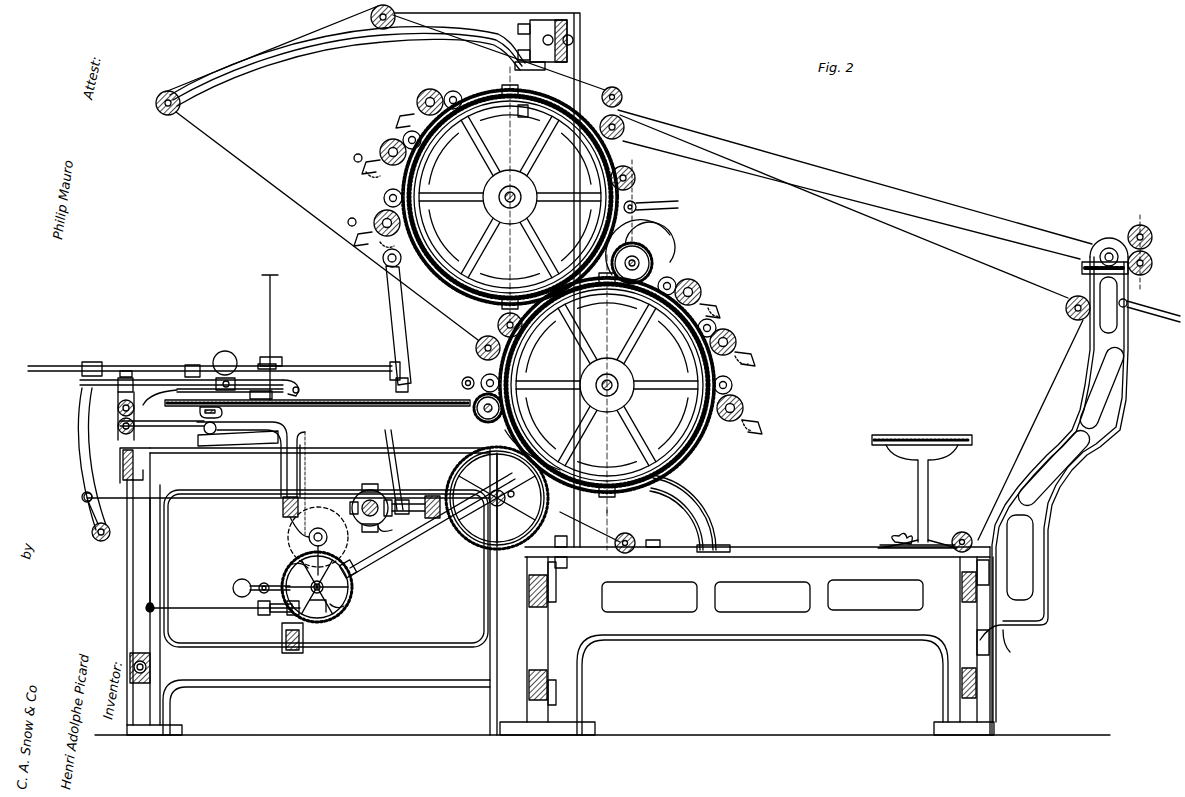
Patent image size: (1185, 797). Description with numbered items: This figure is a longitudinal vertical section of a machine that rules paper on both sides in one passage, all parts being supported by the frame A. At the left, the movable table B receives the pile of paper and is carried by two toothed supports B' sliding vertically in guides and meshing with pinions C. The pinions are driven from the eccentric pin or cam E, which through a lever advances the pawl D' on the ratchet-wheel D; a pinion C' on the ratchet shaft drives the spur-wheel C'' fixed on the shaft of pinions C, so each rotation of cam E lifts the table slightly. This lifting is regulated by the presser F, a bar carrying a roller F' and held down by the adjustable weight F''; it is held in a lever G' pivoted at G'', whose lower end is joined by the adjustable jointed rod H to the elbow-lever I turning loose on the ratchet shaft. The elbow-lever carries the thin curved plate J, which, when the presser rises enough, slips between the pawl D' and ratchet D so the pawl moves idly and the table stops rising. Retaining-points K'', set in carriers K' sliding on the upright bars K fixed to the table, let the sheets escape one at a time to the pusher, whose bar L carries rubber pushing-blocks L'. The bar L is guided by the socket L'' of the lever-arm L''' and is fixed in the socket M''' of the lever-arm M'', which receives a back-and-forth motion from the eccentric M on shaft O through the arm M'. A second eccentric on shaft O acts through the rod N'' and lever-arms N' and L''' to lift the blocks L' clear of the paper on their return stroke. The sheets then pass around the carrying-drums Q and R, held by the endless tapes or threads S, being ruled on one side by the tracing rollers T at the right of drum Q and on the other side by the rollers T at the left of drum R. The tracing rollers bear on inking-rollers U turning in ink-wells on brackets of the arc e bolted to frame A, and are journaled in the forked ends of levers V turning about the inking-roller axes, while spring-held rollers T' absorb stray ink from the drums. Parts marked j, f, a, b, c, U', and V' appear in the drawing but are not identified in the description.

The frame A is at (624, 374).
The carrying-drum R is at (510, 197).
The carrying-drum Q is at (608, 402).
The arc e is at (509, 120).
The curved guide arm j is at (338, 36).
The endless tapes or threads S is at (658, 279).
The pulley lever f is at (1149, 307).
The tracing disks or rollers T is at (559, 248).
The spring-held rollers T' is at (577, 260).
The inking-rollers U is at (558, 252).
The roller bracket U' is at (730, 365).
The levers V is at (745, 364).
The roller spring V' is at (549, 240).
The connecting arm a is at (401, 320).
The socket M''' is at (214, 363).
The socket L'' is at (190, 360).
The weight F'' is at (226, 370).
The retaining-points K'' is at (260, 356).
The carriers K' is at (275, 374).
The upright bars K is at (277, 337).
The bar L is at (205, 366).
The roller F' is at (303, 386).
The presser F is at (230, 393).
The pushing-blocks L' is at (317, 390).
The movable table B is at (245, 454).
The lever-arm L''' is at (160, 402).
The pivot G'' is at (117, 409).
The lever-arm N' is at (168, 429).
The toothed supports B' is at (264, 483).
The lever-arm M'' is at (94, 464).
The arm M' is at (87, 512).
The lever G' is at (146, 553).
The eccentric pin or cam E is at (497, 498).
The ratchet-wheel D is at (326, 602).
The pinion C' is at (326, 600).
The pinions C is at (318, 537).
The spur-wheel C'' is at (343, 557).
The eccentric M is at (369, 508).
The shaft O is at (371, 500).
The bracket b is at (416, 510).
The link c is at (385, 533).
The rod N'' is at (404, 470).
The jointed rod H is at (212, 608).
The pawl D' is at (261, 582).
The thin curved plate J is at (264, 578).
The elbow-lever I is at (282, 562).